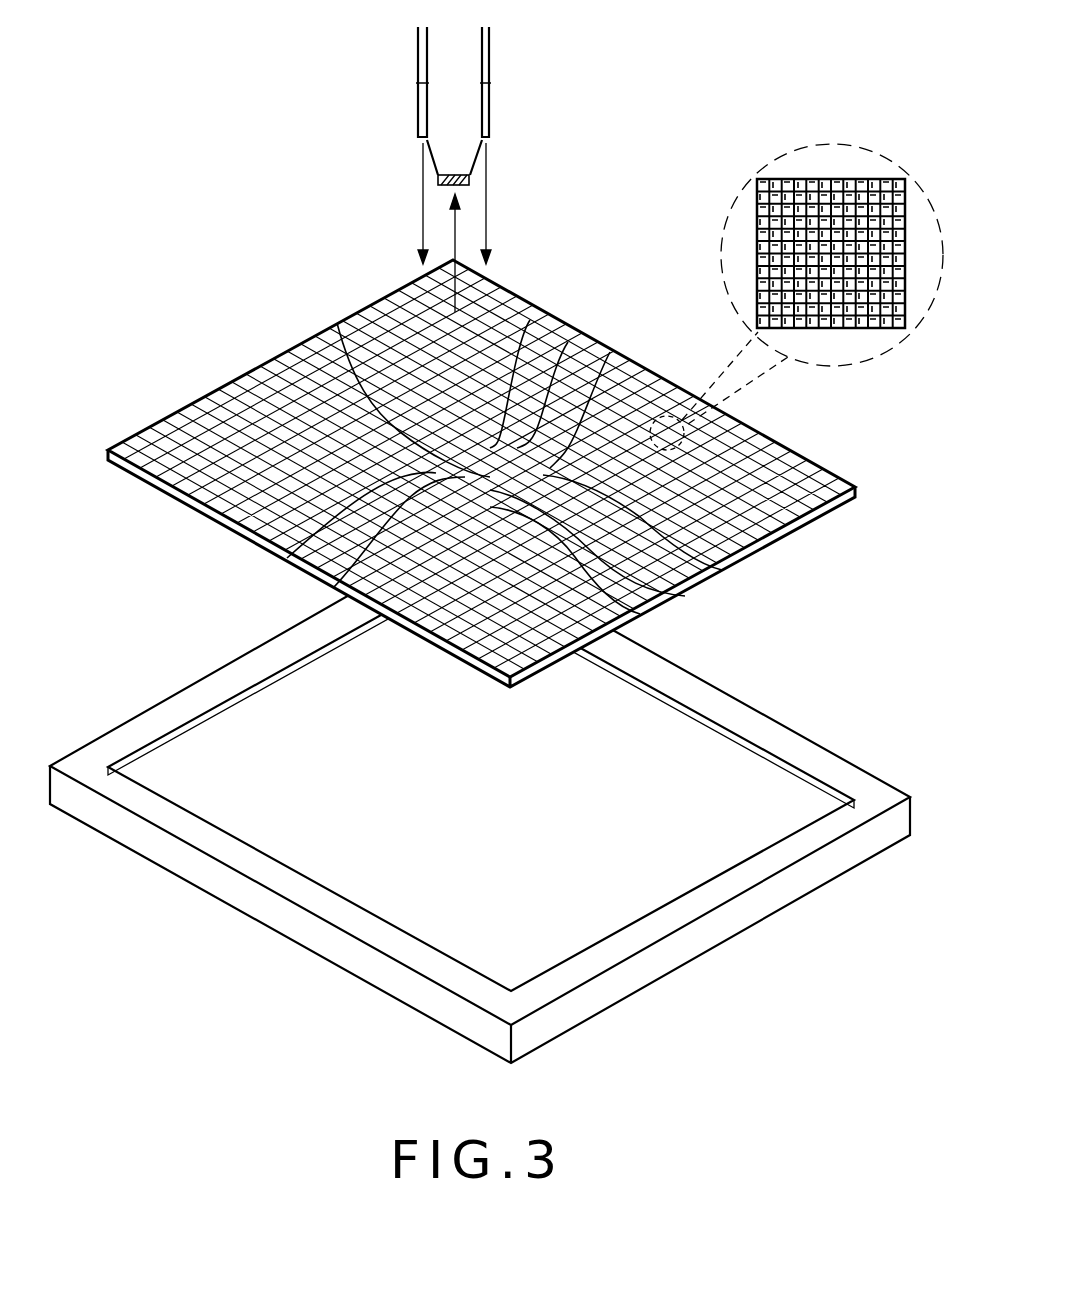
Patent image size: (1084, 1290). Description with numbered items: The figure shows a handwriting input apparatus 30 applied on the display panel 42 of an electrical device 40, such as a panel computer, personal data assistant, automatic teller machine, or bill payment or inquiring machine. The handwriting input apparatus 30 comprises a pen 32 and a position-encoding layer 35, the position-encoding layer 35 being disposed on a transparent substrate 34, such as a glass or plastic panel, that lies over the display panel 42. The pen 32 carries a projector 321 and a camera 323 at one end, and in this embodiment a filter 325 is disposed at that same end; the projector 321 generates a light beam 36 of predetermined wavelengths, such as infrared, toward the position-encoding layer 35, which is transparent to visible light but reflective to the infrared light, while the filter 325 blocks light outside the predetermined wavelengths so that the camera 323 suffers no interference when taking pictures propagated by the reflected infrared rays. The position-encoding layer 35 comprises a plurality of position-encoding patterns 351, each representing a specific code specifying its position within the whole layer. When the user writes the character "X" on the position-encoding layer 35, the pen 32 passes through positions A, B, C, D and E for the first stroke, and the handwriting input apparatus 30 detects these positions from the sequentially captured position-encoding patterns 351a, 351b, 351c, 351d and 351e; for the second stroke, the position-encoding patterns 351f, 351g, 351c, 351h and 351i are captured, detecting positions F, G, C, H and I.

The handwriting input apparatus 30 is at (596, 112).
The pen 32 is at (465, 95).
The projector 321 is at (418, 83).
The camera 323 is at (474, 119).
The filter 325 is at (470, 182).
The light beam 36 is at (453, 228).
The transparent substrate 34 is at (810, 518).
The position-encoding layer 35 is at (795, 475).
The position-encoding pattern 351 is at (735, 250).
The position-encoding pattern 351a is at (530, 320).
The position-encoding pattern 351b is at (568, 342).
The position-encoding pattern 351c is at (337, 323).
The position-encoding pattern 351d is at (685, 596).
The position-encoding pattern 351e is at (640, 614).
The position-encoding pattern 351f is at (722, 570).
The position-encoding pattern 351g is at (610, 352).
The position-encoding pattern 351h is at (333, 588).
The position-encoding pattern 351i is at (287, 558).
The electrical device 40 is at (725, 930).
The display panel 42 is at (526, 903).